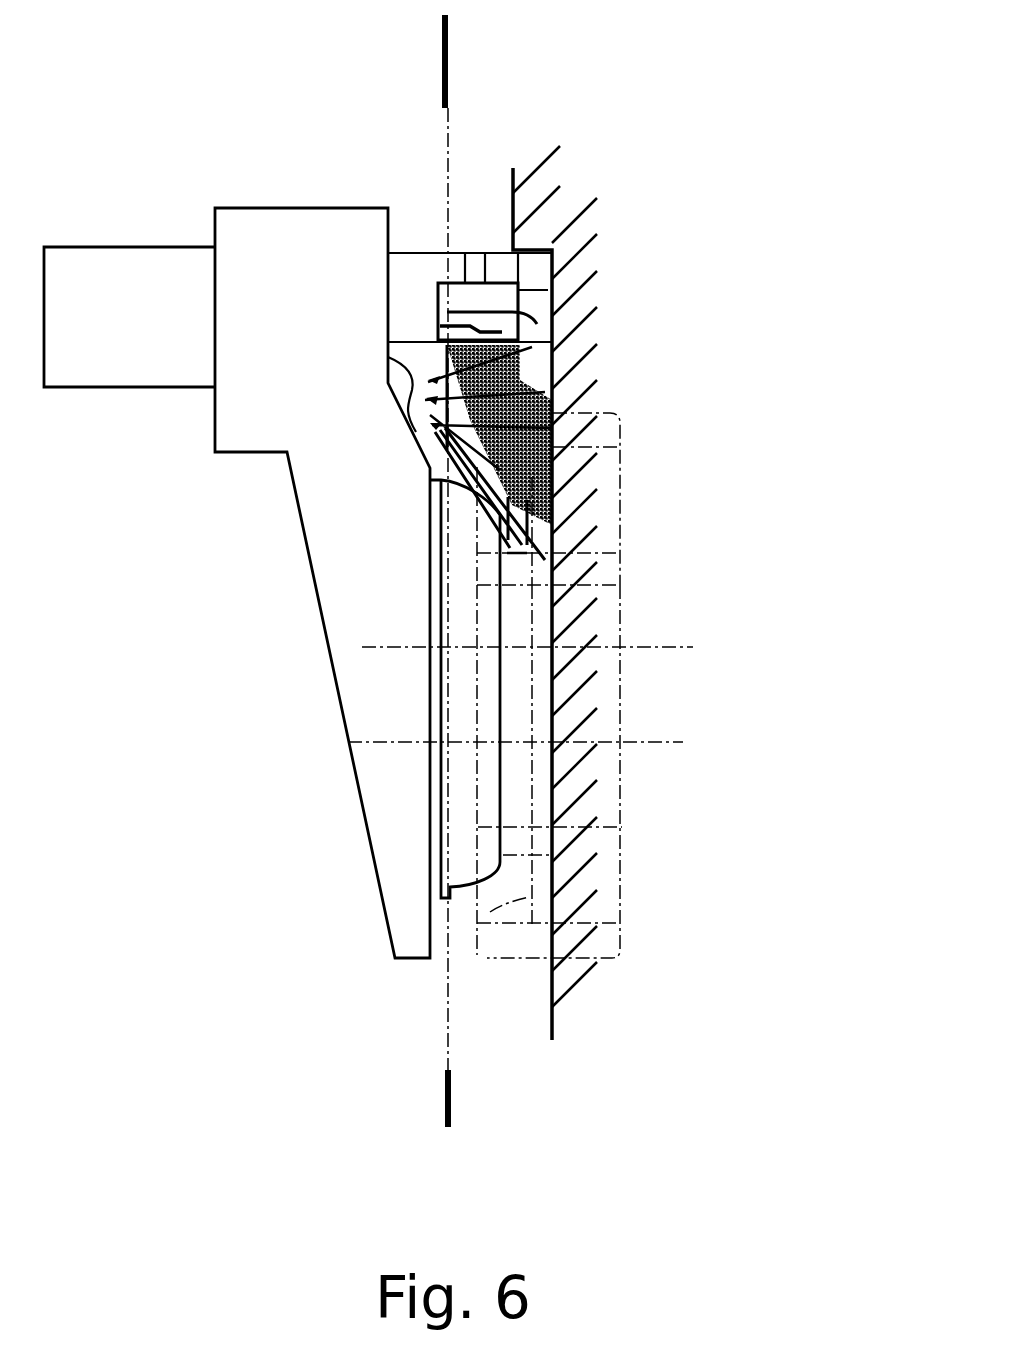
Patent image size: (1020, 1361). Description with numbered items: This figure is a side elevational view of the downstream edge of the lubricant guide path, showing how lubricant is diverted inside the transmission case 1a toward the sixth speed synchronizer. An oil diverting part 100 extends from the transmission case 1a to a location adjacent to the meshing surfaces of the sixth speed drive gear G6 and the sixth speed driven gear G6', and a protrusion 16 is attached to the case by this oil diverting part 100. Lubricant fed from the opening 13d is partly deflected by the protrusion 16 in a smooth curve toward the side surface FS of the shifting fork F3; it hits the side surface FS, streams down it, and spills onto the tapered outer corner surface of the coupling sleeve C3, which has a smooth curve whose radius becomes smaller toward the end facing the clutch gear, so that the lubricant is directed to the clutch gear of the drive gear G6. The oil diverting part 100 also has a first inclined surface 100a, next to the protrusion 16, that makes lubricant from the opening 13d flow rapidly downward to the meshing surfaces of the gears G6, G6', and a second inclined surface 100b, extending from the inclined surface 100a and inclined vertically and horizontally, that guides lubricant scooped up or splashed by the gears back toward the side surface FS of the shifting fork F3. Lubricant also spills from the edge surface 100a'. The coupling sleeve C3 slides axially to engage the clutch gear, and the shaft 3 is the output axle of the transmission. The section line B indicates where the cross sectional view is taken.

The output axle 3 is at (136, 247).
The shifting fork F3 is at (305, 546).
The side surface FS is at (388, 357).
The coupling sleeve C3 is at (457, 853).
The oil diverting part 100 is at (432, 346).
The opening 13d is at (490, 297).
The edge surface 100a' is at (443, 274).
The inclined surface 100a is at (609, 452).
The inclined surface 100b is at (548, 553).
The protrusion 16 is at (540, 383).
The transmission case 1a is at (577, 182).
The sixth speed driven gear G6' is at (586, 577).
The sixth speed drive gear G6 is at (635, 771).
The section line B- B is at (440, 60).